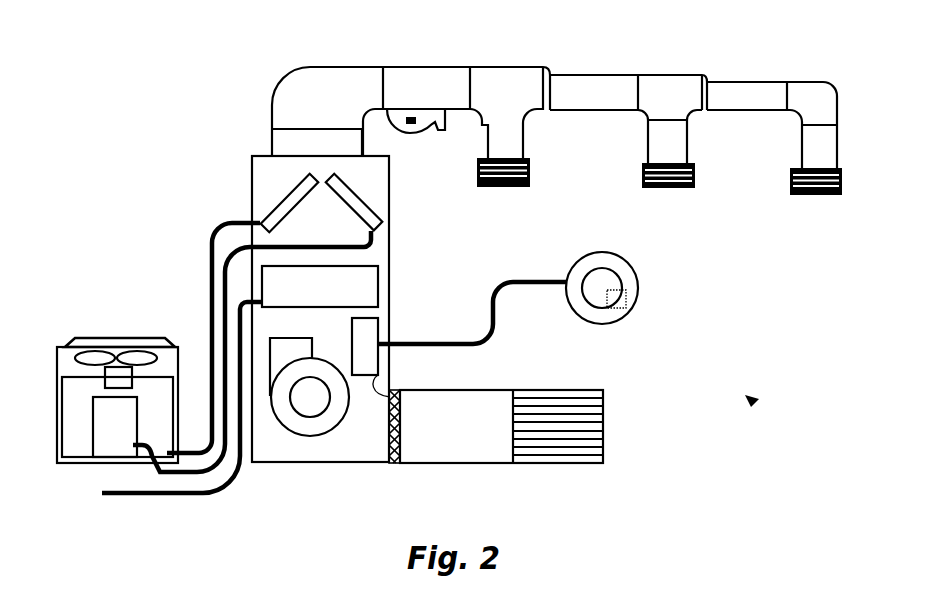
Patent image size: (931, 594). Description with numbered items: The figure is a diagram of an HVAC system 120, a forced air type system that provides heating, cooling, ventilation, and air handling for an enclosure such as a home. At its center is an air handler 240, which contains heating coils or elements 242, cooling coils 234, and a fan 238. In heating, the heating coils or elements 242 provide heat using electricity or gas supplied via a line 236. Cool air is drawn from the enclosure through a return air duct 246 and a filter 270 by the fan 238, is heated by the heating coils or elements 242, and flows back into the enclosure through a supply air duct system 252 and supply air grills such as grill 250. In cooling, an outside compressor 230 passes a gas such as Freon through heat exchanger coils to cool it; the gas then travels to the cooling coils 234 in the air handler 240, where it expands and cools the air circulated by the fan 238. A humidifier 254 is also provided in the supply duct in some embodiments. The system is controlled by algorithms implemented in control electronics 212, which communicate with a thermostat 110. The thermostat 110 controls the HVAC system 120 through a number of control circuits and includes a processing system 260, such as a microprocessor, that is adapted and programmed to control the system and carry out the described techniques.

The thermostat 110 is at (638, 285).
The HVAC system 120 is at (755, 402).
The control electronics 212 is at (378, 327).
The outside compressor 230 is at (120, 338).
The cooling coils 234 is at (283, 193).
The line 236 is at (212, 494).
The fan 238 is at (317, 427).
The air handler 240 is at (252, 157).
The heating coils or elements 242 is at (341, 299).
The return air duct 246 is at (605, 430).
The supply air grill 250 is at (530, 172).
The supply air duct system 252 is at (588, 75).
The humidifier 254 is at (415, 133).
The processing system 260 is at (628, 303).
The filter 270 is at (395, 463).